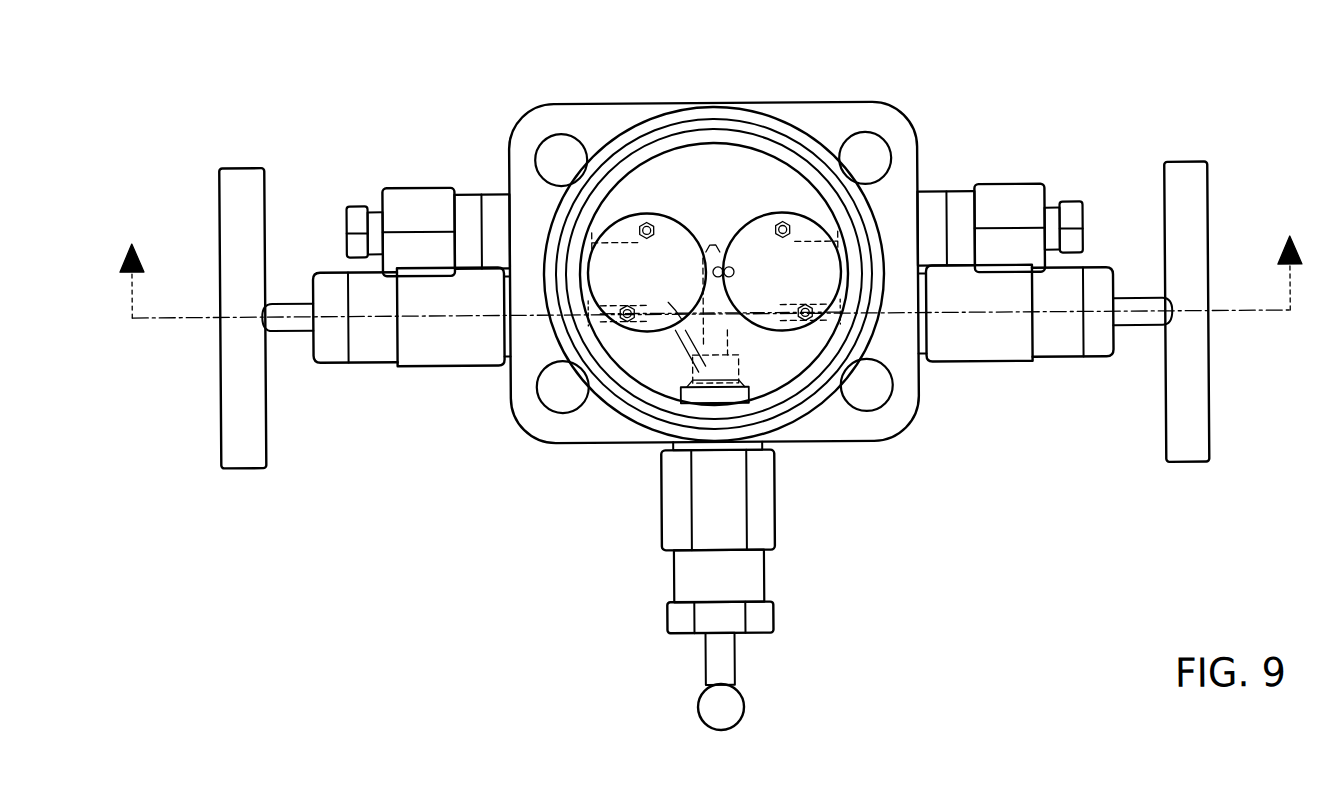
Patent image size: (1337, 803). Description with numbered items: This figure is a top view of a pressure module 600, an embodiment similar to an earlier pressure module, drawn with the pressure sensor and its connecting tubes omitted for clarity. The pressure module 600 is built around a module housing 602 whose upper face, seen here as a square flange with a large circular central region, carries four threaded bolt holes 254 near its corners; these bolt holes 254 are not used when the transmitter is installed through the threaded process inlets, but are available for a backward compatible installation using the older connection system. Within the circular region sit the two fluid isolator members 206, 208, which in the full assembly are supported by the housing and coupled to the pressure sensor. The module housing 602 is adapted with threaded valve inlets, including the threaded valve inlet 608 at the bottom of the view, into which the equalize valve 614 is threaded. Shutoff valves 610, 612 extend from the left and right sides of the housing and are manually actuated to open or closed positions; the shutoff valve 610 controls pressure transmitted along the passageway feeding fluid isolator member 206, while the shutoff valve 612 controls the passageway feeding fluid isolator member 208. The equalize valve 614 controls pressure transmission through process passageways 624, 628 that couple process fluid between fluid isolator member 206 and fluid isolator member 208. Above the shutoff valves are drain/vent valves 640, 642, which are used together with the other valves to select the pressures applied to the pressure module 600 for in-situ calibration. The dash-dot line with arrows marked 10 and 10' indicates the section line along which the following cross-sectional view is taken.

The pressure module 600 is at (1105, 108).
The module housing 602 is at (600, 441).
The fluid isolator member 206 is at (672, 215).
The fluid isolator member 208 is at (758, 215).
The threaded bolt holes 254 is at (543, 134).
The shutoff valve 610 is at (467, 361).
The shutoff valve 612 is at (982, 364).
The drain/vent valve 640 is at (415, 184).
The drain/vent valve 642 is at (988, 185).
The equalize valve 614 is at (655, 522).
The threaded valve inlet 608 is at (752, 385).
The process passageway 624 is at (727, 328).
The process passageway 628 is at (685, 324).
The section line 10 is at (130, 260).
The section line 10' is at (1290, 256).